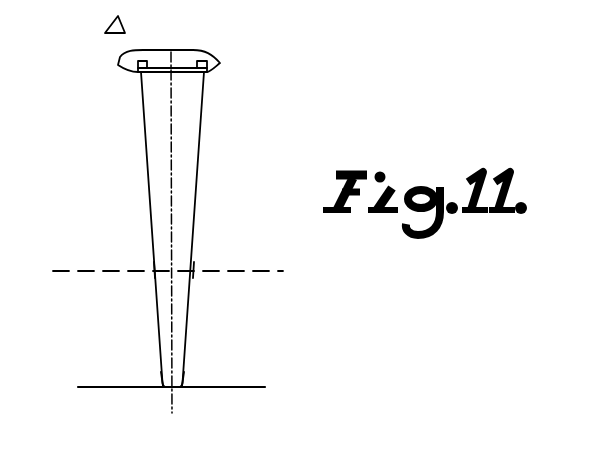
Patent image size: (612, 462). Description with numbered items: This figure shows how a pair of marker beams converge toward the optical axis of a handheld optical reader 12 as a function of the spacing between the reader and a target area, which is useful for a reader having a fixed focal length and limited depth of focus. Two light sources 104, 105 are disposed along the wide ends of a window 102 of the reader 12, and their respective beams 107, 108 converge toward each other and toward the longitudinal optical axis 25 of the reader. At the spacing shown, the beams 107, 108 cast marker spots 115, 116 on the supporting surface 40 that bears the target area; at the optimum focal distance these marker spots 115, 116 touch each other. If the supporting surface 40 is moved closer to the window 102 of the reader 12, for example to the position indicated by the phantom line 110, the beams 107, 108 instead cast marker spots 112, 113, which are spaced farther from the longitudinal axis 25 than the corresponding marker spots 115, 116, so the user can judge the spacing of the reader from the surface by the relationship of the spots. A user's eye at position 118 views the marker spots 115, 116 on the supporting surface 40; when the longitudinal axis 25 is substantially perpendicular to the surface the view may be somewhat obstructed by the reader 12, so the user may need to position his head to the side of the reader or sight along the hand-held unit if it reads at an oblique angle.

The reader 12 is at (185, 52).
The window 102 is at (188, 72).
The light source 104 is at (219, 58).
The light source 105 is at (130, 63).
The beam 107 is at (201, 132).
The beam 108 is at (145, 144).
The longitudinal optical axis 25 is at (168, 217).
The phantom line 110 is at (268, 270).
The marker spot 112 is at (193, 270).
The marker spot 113 is at (155, 272).
The marker spot 115 is at (182, 385).
The marker spot 116 is at (162, 385).
The supporting surface 40 is at (245, 387).
The user's eye 118 is at (112, 27).